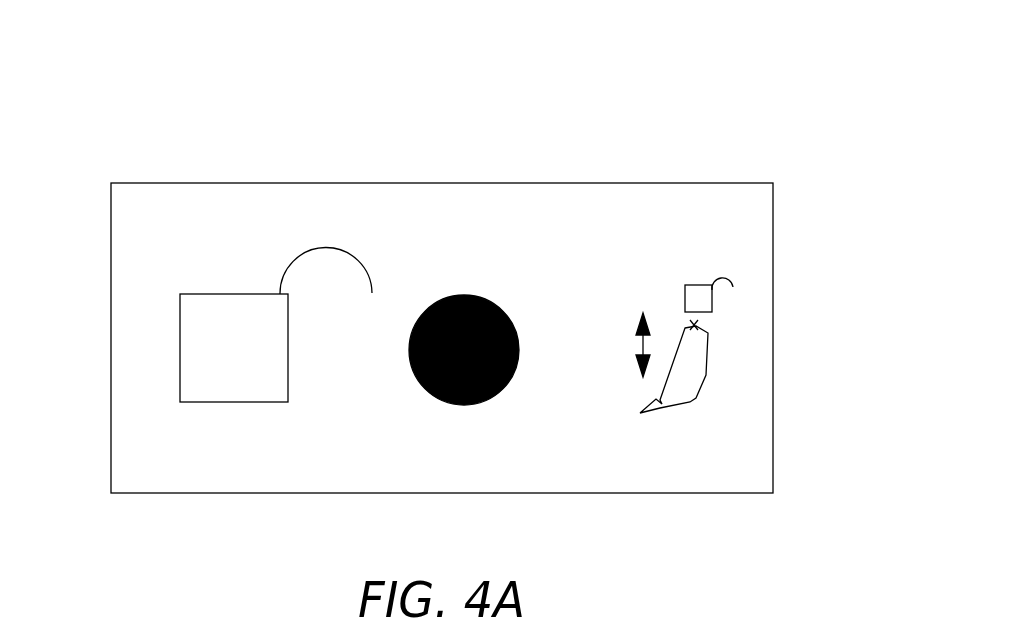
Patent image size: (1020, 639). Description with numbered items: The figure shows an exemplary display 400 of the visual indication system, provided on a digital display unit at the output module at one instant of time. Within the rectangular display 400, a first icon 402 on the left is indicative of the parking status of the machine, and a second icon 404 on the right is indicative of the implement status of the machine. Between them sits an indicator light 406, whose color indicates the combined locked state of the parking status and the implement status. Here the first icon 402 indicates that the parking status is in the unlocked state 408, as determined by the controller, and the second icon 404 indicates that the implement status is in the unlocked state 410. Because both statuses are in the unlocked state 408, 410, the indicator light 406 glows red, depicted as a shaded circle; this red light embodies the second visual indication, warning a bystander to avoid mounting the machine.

The display 400 is at (659, 103).
The first icon 402 is at (220, 294).
The second icon 404 is at (699, 285).
The indicator light 406 is at (463, 294).
The unlocked state 408 is at (181, 334).
The unlocked state 410 is at (708, 355).